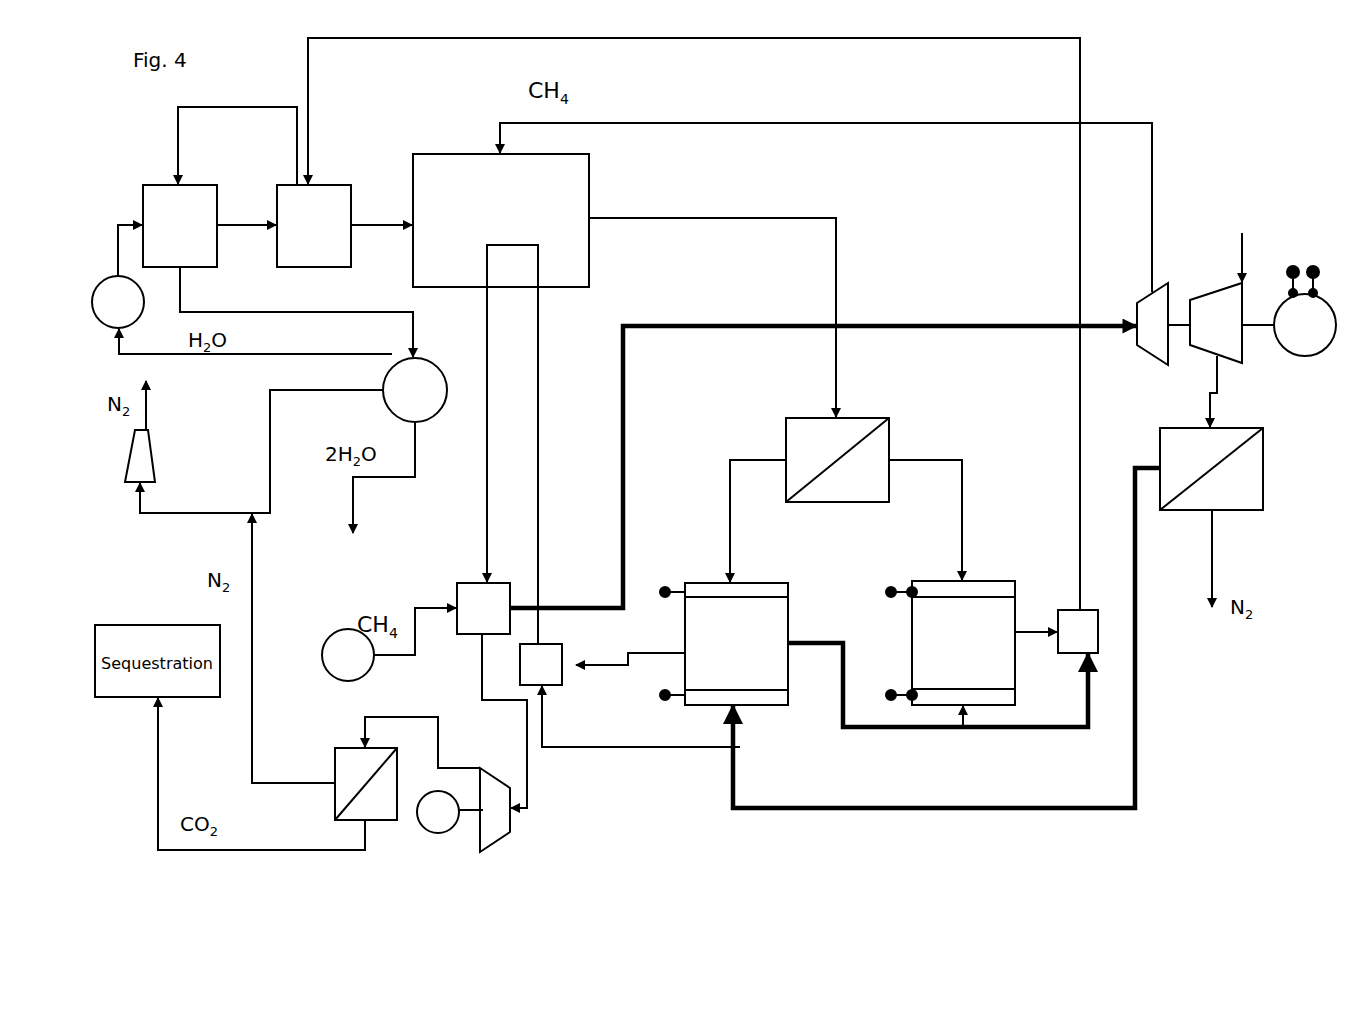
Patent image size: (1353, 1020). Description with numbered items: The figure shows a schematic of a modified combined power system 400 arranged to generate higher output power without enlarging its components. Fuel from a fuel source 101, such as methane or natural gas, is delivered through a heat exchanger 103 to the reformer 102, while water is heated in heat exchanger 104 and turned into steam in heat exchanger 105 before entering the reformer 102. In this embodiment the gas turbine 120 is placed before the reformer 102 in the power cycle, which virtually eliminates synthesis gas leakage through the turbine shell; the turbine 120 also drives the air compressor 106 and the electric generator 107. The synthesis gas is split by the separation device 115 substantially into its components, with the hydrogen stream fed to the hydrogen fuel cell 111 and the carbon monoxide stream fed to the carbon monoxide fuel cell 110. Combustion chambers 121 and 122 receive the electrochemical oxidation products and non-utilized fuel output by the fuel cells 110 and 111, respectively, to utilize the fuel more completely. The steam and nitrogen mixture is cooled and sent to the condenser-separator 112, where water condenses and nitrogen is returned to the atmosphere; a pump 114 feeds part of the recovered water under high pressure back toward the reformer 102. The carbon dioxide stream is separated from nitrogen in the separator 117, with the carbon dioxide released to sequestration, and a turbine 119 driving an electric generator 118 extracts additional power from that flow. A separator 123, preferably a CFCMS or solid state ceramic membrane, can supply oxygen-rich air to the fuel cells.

The fuel source 101 is at (348, 655).
The reformer 102 is at (501, 220).
The heat exchanger 103 is at (483, 608).
The heat exchanger 104 is at (180, 226).
The heat exchanger 105 is at (314, 226).
The air compressor 106 is at (1216, 323).
The electric generator 107 is at (1305, 311).
The carbon monoxide fuel cell 110 is at (724, 644).
The hydrogen fuel cell 111 is at (950, 643).
The condenser-separator 112 is at (415, 390).
The pump 114 is at (118, 302).
The separation device 115 is at (837, 460).
The separator 117 is at (366, 784).
The electric generator 118 is at (438, 812).
The turbine 119 is at (493, 810).
The gas turbine 120 is at (1153, 324).
The combustion chamber 121 is at (541, 664).
The combustion chamber 122 is at (1078, 631).
The separator 123 is at (1211, 469).
The combined power system 400 is at (360, 644).